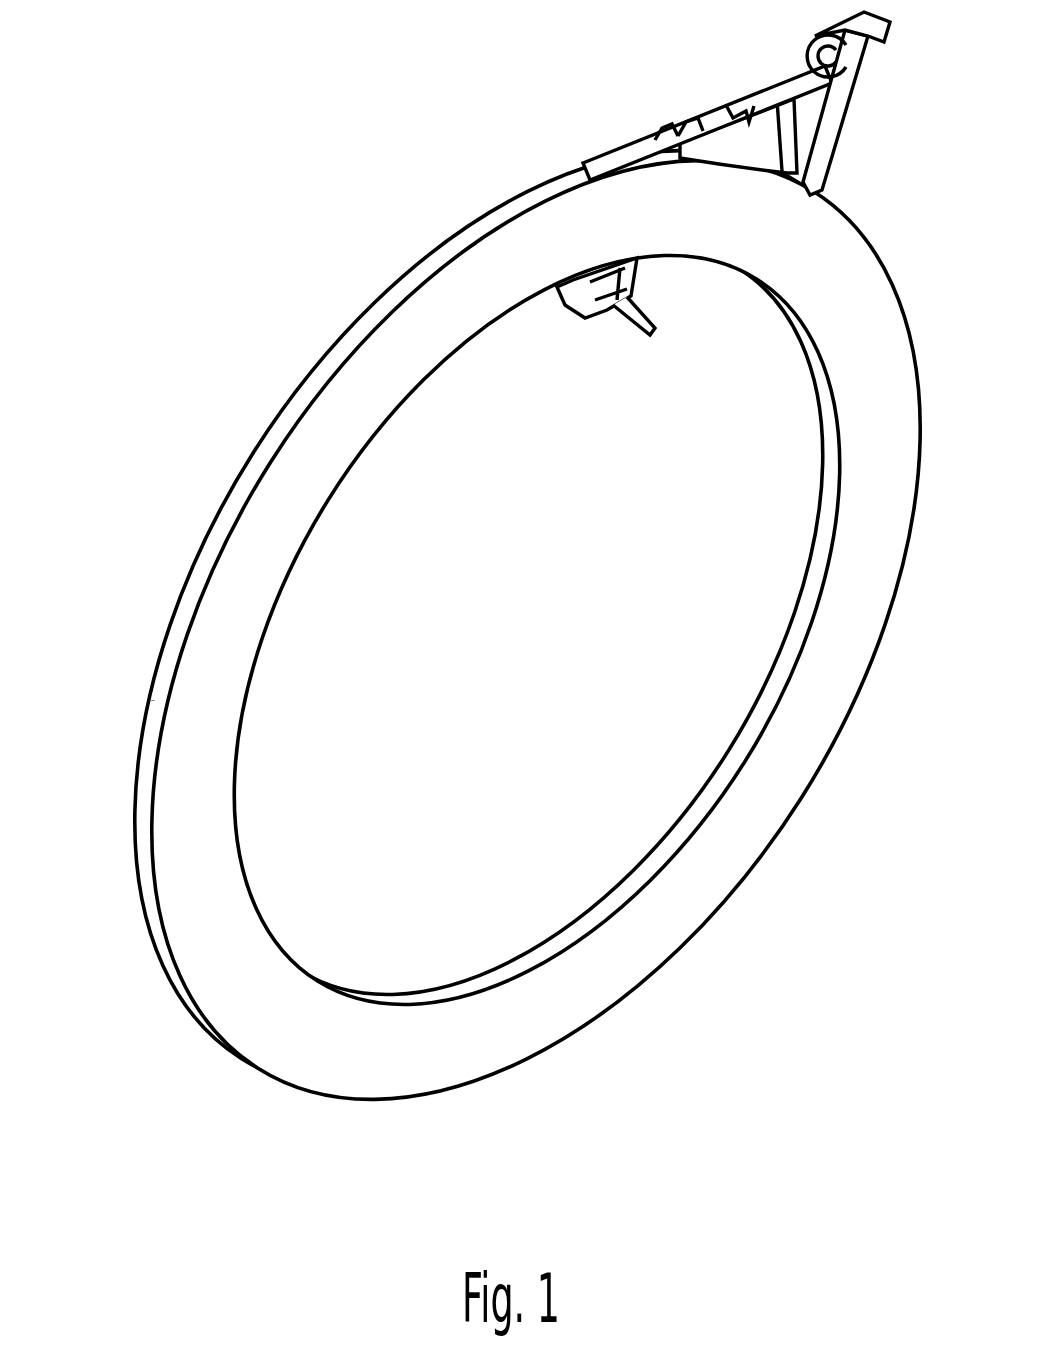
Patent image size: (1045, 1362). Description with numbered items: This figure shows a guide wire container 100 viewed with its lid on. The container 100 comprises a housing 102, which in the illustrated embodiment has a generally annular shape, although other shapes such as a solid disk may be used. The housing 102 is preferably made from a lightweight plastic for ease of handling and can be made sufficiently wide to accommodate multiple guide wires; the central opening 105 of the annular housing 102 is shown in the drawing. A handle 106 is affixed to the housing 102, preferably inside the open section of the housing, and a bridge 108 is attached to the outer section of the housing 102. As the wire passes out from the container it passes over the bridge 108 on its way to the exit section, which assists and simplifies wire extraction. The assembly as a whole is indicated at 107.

The guide wire container 100 is at (262, 432).
The housing 102 is at (157, 703).
The inner opening 105 is at (273, 620).
The handle 106 is at (612, 313).
The ring assembly 107 is at (372, 242).
The bridge 108 is at (780, 87).